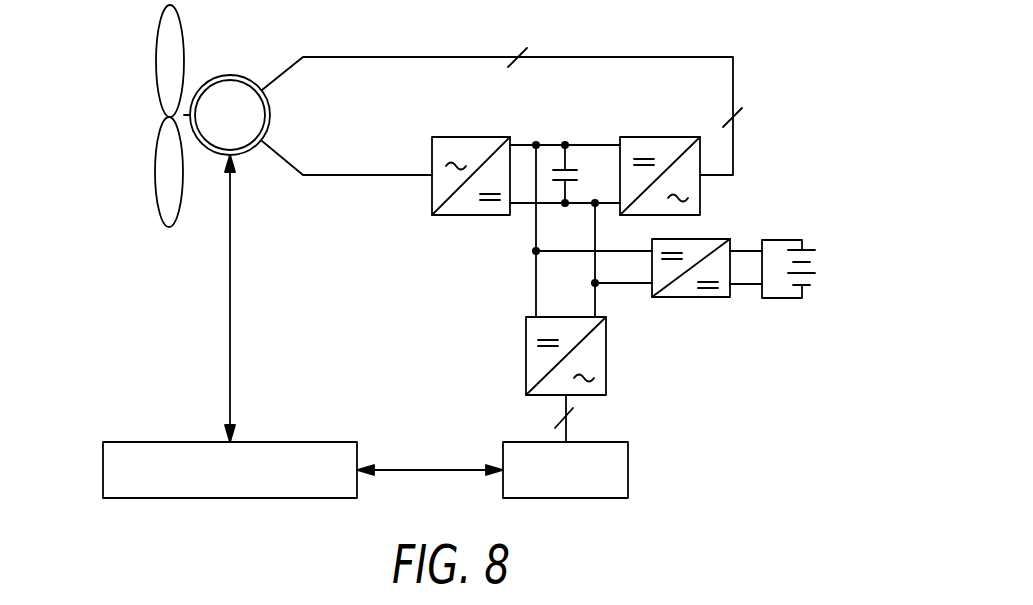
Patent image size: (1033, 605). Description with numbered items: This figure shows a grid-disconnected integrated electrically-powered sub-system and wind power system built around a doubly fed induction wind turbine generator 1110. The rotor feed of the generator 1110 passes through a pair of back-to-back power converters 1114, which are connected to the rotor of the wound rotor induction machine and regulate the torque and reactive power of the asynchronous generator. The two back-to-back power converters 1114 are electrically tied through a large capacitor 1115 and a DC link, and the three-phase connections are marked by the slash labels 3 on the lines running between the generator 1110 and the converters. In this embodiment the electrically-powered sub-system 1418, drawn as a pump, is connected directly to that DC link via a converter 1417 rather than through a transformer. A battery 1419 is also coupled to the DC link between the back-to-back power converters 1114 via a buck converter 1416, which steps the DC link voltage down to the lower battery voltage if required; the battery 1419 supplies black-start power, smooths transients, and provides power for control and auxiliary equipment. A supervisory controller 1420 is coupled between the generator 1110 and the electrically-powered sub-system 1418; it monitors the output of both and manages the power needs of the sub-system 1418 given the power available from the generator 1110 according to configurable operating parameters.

The DFIG wind turbine generator 1110 is at (228, 76).
The three-phase line marker 3 is at (632, 232).
The back-to-back power converters 1114 is at (466, 136).
The capacitor 1115 is at (573, 167).
The buck converter 1416 is at (705, 238).
The battery 1419 is at (808, 248).
The converter 1417 is at (608, 359).
The electrically-powered sub-system 1418 is at (631, 471).
The supervisory controller 1420 is at (288, 442).